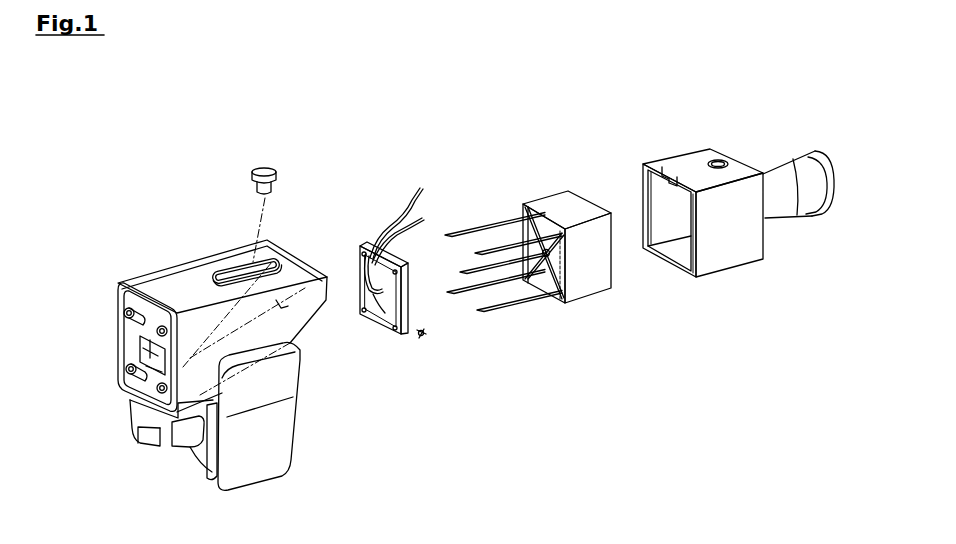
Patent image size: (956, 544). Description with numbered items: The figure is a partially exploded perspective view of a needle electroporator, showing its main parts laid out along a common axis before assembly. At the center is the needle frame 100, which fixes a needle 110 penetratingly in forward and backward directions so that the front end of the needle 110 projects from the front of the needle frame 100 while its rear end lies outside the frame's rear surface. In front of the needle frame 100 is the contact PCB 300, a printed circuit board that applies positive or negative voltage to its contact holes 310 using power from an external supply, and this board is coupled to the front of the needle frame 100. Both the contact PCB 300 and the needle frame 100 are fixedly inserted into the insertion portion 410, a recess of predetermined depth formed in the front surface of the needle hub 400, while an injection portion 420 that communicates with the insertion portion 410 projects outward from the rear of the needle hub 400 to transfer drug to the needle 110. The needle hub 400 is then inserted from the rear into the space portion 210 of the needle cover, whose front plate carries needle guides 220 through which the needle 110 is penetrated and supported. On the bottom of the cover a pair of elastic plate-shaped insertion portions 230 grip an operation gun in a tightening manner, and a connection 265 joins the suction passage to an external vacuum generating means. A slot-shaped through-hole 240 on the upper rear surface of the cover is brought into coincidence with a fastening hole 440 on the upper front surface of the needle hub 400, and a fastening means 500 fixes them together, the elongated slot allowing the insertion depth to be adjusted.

The needle frame 100 is at (592, 310).
The needle 110 is at (497, 222).
The space portion 210 is at (303, 340).
The needle guide 220 is at (120, 291).
The insertion portion 230 is at (287, 437).
The through-hole 240 is at (241, 265).
The connection 265 is at (196, 452).
The contact PCB 300 is at (421, 340).
The contact hole 310 is at (393, 331).
The needle hub 400 is at (740, 286).
The insertion portion 410 is at (657, 207).
The injection portion 420 is at (777, 163).
The fastening hole 440 is at (721, 158).
The fastening means 500 is at (263, 164).